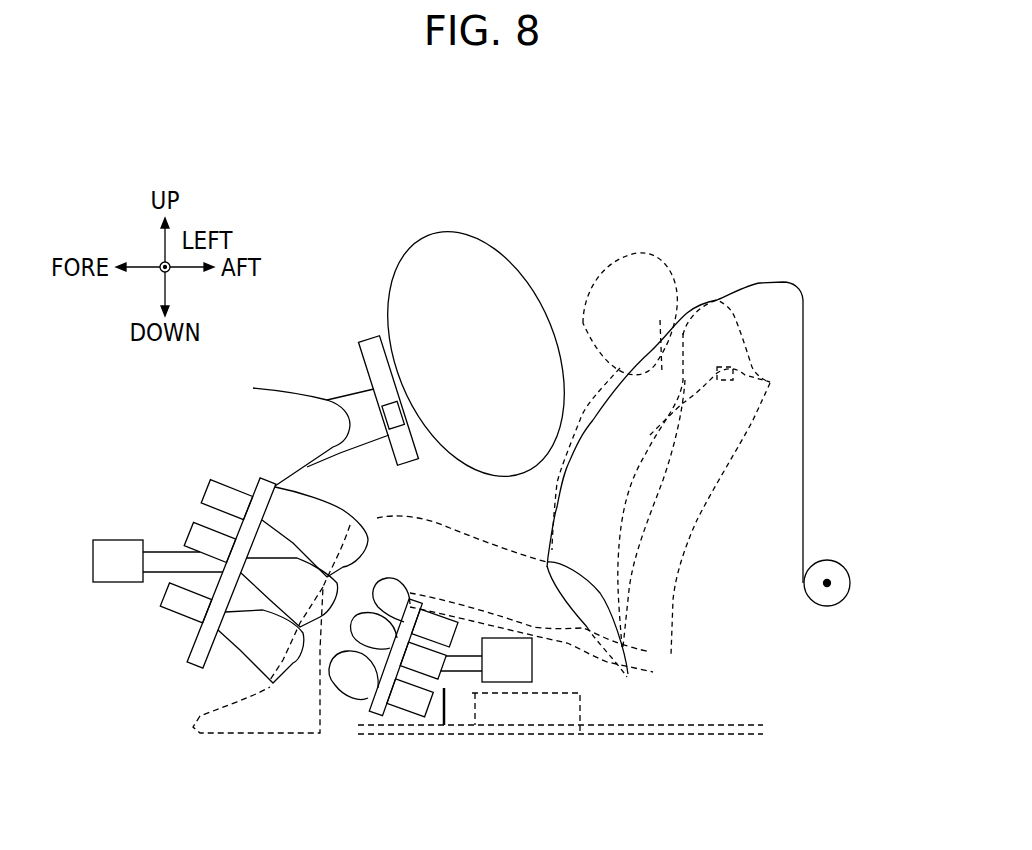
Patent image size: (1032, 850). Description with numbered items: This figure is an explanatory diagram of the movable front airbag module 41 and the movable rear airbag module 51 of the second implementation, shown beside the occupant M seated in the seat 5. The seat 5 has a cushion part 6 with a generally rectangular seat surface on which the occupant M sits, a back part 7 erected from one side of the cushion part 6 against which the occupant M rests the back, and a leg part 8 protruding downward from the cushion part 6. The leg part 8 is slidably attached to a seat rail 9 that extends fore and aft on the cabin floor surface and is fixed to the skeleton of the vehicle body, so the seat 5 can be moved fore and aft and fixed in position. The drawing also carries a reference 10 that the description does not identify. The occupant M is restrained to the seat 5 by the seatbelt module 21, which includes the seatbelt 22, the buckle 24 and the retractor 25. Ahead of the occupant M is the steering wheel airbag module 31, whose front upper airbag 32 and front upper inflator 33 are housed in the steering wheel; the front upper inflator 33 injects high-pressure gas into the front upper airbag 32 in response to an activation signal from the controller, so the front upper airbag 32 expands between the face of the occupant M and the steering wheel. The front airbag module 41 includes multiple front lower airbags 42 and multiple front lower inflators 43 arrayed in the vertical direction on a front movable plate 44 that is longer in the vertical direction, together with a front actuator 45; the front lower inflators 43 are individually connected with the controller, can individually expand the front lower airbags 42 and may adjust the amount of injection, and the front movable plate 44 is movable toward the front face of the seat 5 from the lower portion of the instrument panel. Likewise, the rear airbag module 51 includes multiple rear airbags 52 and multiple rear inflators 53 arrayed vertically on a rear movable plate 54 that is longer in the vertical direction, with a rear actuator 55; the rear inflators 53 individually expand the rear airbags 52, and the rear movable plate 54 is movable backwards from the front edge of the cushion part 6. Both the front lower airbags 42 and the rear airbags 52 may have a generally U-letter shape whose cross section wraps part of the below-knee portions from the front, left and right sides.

The seat 5 is at (773, 633).
The cushion part 6 is at (655, 680).
The back part 7 is at (672, 592).
The leg part 8 is at (593, 753).
The seat rail 9 is at (720, 735).
The vehicle seat 10 is at (726, 244).
The seatbelt module 21 is at (813, 442).
The seatbelt 22 is at (805, 510).
The buckle 24 is at (600, 660).
The retractor 25 is at (832, 562).
The steering wheel airbag module 31 is at (460, 335).
The front upper airbag 32 is at (406, 300).
The front upper inflator 33 is at (390, 403).
The front airbag module 41 is at (154, 683).
The front lower airbags 42 is at (348, 520).
The front lower inflators 43 is at (224, 492).
The front movable plate 44 is at (260, 477).
The front actuator 45 is at (120, 540).
The rear airbag module 51 is at (313, 750).
The rear airbags 52 is at (407, 577).
The rear inflators 53 is at (409, 712).
The rear movable plate 54 is at (377, 716).
The rear actuator 55 is at (511, 683).
The occupant M is at (645, 262).